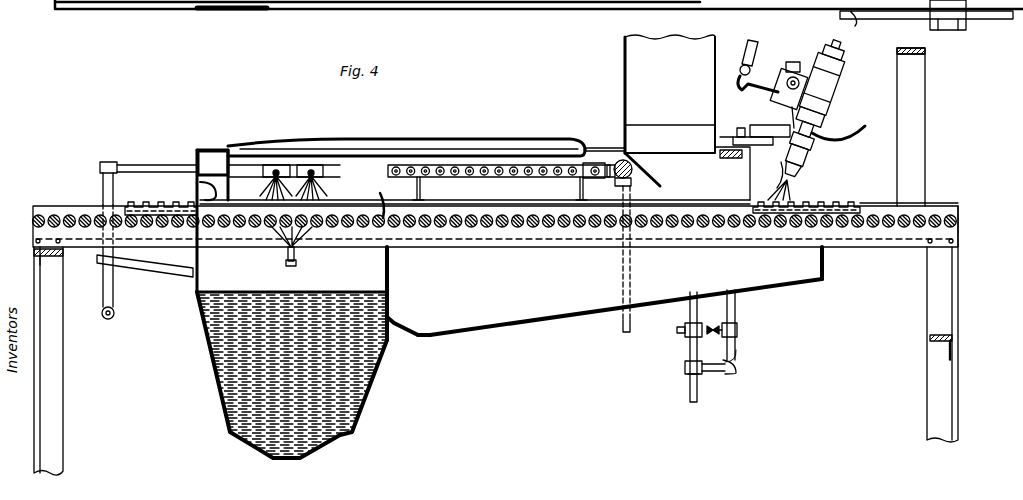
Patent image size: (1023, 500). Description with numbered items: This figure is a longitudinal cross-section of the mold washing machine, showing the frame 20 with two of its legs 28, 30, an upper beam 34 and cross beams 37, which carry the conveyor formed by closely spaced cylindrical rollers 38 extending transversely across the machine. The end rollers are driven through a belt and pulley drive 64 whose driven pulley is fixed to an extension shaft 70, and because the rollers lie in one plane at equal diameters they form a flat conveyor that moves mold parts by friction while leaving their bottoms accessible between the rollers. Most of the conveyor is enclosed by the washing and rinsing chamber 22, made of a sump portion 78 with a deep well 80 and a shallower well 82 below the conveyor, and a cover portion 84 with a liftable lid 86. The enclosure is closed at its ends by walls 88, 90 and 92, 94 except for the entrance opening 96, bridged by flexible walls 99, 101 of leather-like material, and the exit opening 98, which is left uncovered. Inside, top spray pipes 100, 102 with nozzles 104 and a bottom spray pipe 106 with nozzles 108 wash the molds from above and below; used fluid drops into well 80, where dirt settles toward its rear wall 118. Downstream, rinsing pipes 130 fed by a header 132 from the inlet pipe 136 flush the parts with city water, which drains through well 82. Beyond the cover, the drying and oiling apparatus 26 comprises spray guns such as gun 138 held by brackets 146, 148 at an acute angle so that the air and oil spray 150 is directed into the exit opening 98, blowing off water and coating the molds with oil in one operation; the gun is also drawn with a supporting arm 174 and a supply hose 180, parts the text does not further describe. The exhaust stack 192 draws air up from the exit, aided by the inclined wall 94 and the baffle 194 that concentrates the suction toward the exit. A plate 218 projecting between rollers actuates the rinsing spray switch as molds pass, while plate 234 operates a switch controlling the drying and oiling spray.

The frame 20 is at (958, 225).
The mold washing and rinsing chamber 22 is at (547, 314).
The drying and oiling spray apparatus 26 is at (824, 107).
The leg 28 is at (928, 303).
The leg 30 is at (63, 402).
The upper beam 34 is at (955, 240).
The cross beam 37 is at (42, 257).
The cylindrical rollers 38 is at (84, 214).
The belt and pulley drive 64 is at (852, 14).
The extension shaft 70 is at (952, 34).
The sump portion 78 is at (426, 337).
The well 80 is at (360, 400).
The well 82 is at (564, 302).
The cover portion 84 is at (213, 150).
The lid 86 is at (352, 140).
The front end wall 88 is at (195, 283).
The end wall 90 is at (197, 153).
The end wall 92 is at (828, 254).
The end chamber wall 94 is at (750, 166).
The entrance opening 96 is at (200, 190).
The exit opening 98 is at (772, 167).
The flexible wall 99 is at (196, 172).
The top spray pipe 100 is at (276, 165).
The flexible wall 101 is at (231, 200).
The top spray pipe 102 is at (320, 168).
The spray nozzles 104 is at (284, 177).
The bottom spray pipe 106 is at (297, 262).
The spray nozzles 108 is at (286, 263).
The rear wall 118 is at (390, 268).
The rinsing spray pipes 130 is at (456, 0).
The header 132 is at (505, 0).
The rinsing spray inlet pipe 136 is at (626, 333).
The spray gun 138 is at (832, 99).
The bracket 146 is at (740, 128).
The bracket 148 is at (786, 130).
The air and oil spray 150 is at (794, 179).
The arm 174 is at (755, 42).
The hose 180 is at (846, 136).
The exhaust stack 192 is at (625, 70).
The inclined baffle 194 is at (651, 174).
The plate 218 is at (372, 200).
The actuating plate 234 is at (762, 216).